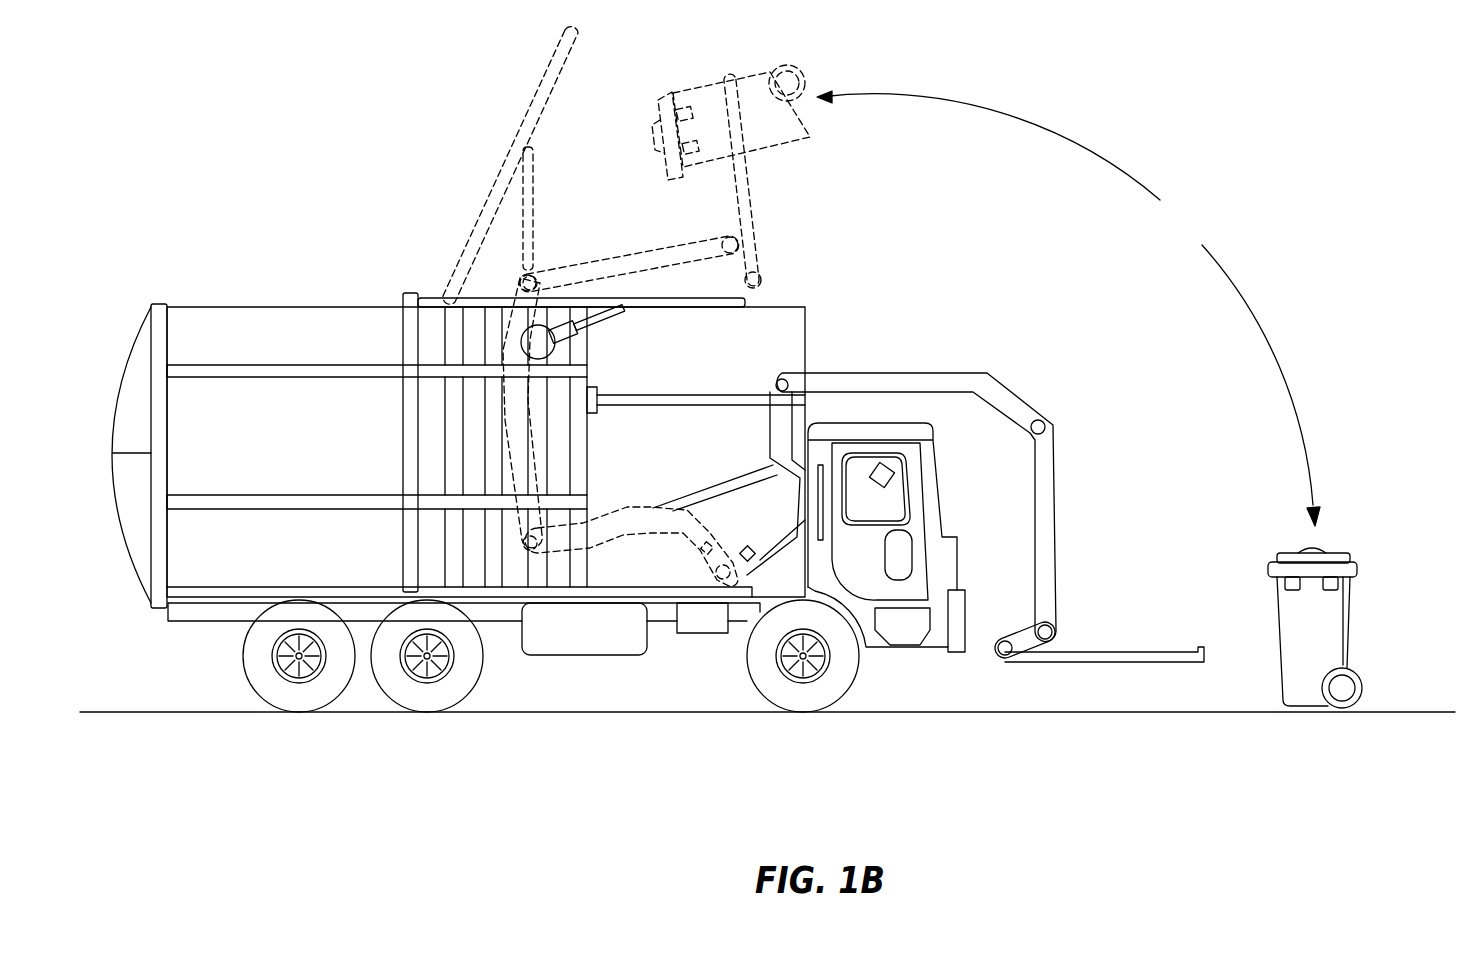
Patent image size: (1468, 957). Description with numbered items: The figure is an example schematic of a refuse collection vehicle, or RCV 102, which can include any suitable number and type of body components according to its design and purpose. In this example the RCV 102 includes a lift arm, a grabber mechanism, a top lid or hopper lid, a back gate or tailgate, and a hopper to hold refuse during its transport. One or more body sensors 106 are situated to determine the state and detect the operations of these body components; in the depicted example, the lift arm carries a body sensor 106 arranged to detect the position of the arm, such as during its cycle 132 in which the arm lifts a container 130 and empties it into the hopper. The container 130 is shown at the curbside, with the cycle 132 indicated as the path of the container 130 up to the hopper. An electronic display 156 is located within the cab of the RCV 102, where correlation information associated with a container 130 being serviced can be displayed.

The refuse collection vehicle 102 is at (224, 294).
The body sensor 106 is at (750, 557).
The container 130 is at (1353, 532).
The cycle 132 is at (1068, 308).
The electronic display 156 is at (885, 462).